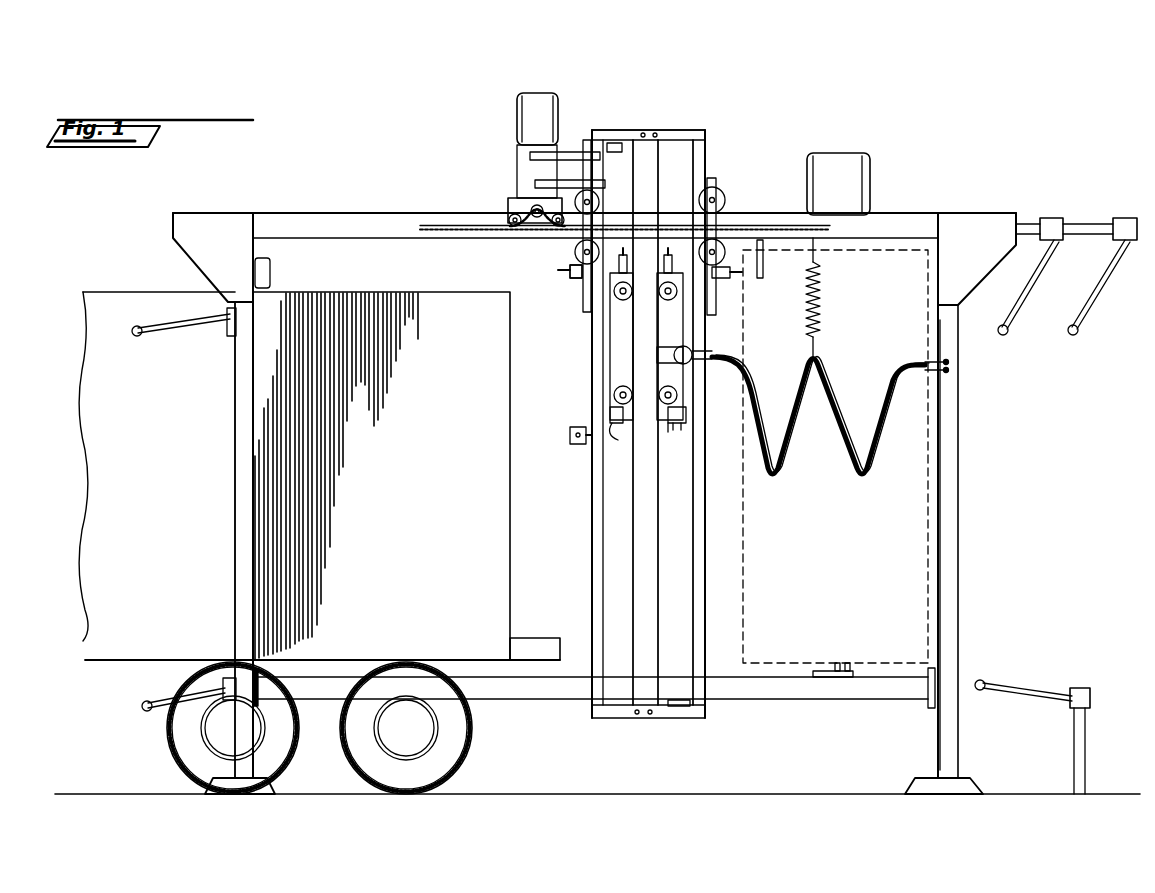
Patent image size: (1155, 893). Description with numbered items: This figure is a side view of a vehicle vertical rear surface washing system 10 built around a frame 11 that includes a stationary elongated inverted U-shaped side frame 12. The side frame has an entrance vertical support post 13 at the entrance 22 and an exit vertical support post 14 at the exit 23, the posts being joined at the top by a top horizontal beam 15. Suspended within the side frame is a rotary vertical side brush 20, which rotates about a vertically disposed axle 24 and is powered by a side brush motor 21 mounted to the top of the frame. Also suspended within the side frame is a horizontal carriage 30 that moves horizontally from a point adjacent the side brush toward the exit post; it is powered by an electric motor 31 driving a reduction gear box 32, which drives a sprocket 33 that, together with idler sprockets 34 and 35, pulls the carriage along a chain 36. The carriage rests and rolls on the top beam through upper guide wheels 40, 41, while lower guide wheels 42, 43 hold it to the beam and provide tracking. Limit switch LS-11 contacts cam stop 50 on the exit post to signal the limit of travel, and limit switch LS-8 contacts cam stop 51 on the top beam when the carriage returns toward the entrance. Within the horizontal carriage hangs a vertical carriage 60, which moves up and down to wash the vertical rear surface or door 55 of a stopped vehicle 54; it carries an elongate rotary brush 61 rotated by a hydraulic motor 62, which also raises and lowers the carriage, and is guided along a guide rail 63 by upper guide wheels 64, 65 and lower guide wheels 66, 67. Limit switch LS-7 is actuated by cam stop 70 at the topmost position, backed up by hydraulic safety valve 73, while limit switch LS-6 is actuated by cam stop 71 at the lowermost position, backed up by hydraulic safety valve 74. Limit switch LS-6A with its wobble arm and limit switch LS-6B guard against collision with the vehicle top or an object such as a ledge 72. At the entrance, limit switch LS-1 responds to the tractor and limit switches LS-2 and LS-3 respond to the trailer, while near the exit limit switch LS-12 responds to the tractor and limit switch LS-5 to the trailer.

The vehicle vertical rear surface washing system 10 is at (660, 112).
The frame 11 is at (389, 200).
The side frame 12 is at (225, 210).
The entrance vertical support post 13 is at (948, 753).
The exit vertical support post 14 is at (238, 512).
The top horizontal beam 15 is at (312, 210).
The rotary vertical side brush 20 is at (930, 537).
The side brush motor 21 is at (835, 160).
The entrance 22 is at (970, 462).
The exit 23 is at (226, 459).
The axle 24 is at (832, 678).
The horizontal carriage 30 is at (695, 135).
The electric motor 31 is at (518, 115).
The reduction gear box 32 is at (510, 205).
The sprocket 33 is at (535, 228).
The idler sprocket 34 is at (512, 220).
The idler sprocket 35 is at (556, 228).
The chain 36 is at (455, 223).
The upper guide wheel 40 is at (722, 200).
The upper guide wheel 41 is at (600, 205).
The lower guide wheel 42 is at (567, 273).
The lower guide wheel 43 is at (725, 258).
The cam stop 50 is at (270, 272).
The cam stop 51 is at (764, 268).
The vehicle 54 is at (83, 641).
The vertical rear surface or door 55 is at (512, 590).
The vertical carriage 60 is at (580, 353).
The rotary brush 61 is at (622, 425).
The hydraulic motor 62 is at (688, 365).
The guide rail 63 is at (648, 578).
The upper guide wheel 64 is at (663, 288).
The upper guide wheel 65 is at (623, 302).
The lower guide wheel 66 is at (618, 393).
The lower guide wheel 67 is at (662, 397).
The cam stop 70 is at (613, 143).
The cam stop 71 is at (678, 708).
The ledge 72 is at (540, 638).
The hydraulic safety valve 73 is at (683, 262).
The hydraulic safety valve 74 is at (668, 425).
The limit switch LS-1 is at (1082, 698).
The limit switch LS-2 is at (1127, 218).
The limit switch LS-3 is at (1052, 218).
The limit switch LS-5 is at (232, 330).
The limit switch LS-6 is at (688, 420).
The limit switch LS-6A is at (610, 413).
The limit switch LS-6B is at (573, 446).
The limit switch LS-7 is at (620, 262).
The limit switch LS-8 is at (722, 282).
The limit switch LS-11 is at (572, 281).
The limit switch LS-12 is at (222, 688).